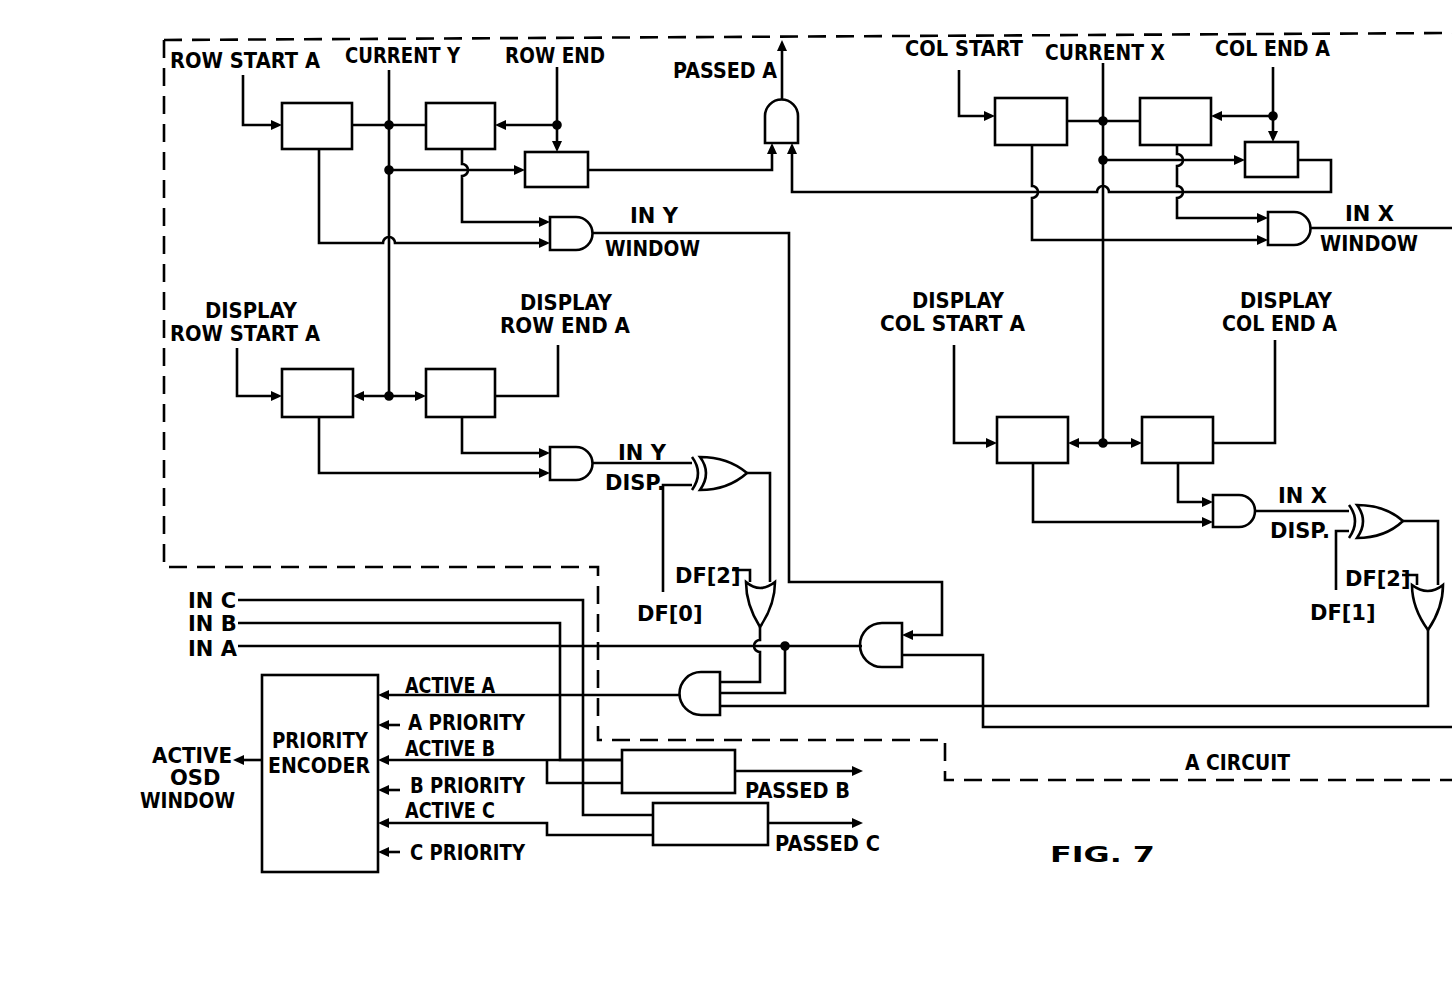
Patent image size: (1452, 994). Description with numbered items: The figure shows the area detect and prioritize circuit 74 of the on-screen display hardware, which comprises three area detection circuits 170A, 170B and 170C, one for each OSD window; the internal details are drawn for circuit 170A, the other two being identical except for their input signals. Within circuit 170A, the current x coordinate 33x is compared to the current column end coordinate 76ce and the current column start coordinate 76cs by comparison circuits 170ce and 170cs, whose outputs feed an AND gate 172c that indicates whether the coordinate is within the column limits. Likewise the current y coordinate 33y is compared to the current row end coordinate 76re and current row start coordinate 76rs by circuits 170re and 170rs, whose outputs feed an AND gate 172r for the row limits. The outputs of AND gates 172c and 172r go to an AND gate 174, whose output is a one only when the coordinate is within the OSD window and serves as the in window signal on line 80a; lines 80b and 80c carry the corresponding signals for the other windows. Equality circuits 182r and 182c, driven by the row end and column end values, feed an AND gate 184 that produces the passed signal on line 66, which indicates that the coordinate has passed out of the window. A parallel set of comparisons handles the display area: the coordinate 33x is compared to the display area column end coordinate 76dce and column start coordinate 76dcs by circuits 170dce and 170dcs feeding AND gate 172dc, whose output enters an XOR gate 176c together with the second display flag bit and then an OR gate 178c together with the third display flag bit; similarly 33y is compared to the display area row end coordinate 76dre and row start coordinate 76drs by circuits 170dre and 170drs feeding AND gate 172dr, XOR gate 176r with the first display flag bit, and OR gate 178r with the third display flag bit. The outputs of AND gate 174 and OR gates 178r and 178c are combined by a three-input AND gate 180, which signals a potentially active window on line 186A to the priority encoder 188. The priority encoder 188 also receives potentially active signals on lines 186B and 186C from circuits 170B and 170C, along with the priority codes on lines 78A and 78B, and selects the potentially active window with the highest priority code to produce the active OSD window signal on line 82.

The current row start coordinate 76rs is at (243, 100).
The row start comparison circuit 170rs is at (283, 152).
The current y coordinate 33y is at (389, 90).
The row end comparison circuit 170re is at (460, 103).
The current row end coordinate 76re is at (557, 84).
The row equality circuit 182r is at (578, 152).
The row AND gate 172r is at (583, 249).
The passed AND gate 184 is at (798, 112).
The interrupt signal line 66 is at (856, 418).
The current column start coordinate 76cs is at (959, 82).
The column start comparison circuit 170cs is at (1020, 83).
The column end comparison circuit 170ce is at (1155, 98).
The current column end coordinate 76ce is at (1273, 82).
The column equality circuit 182c is at (1290, 142).
The column AND gate 172c is at (1280, 250).
The current x coordinate 33x is at (1103, 270).
The current display area row start coordinate 76drs is at (237, 370).
The display area row start comparison circuit 170drs is at (302, 418).
The display area row end comparison circuit 170dre is at (443, 418).
The current display area row end coordinate 76dre is at (558, 362).
The display area row AND gate 172dr is at (575, 481).
The row XOR gate 176r is at (735, 457).
The row OR gate 178r is at (775, 600).
The current display area column start coordinate 76dcs is at (954, 356).
The display area column start comparison circuit 170dcs is at (1010, 417).
The display area column end comparison circuit 170dce is at (1150, 417).
The current display area column end coordinate 76dce is at (1275, 392).
The display area column AND gate 172dc is at (1225, 527).
The column XOR gate 176c is at (1375, 505).
The column OR gate 178c is at (1415, 618).
The in window signal line 80a is at (258, 600).
The in window signal line 80b is at (318, 623).
The in window signal line 80c is at (378, 646).
The potentially active signal line 186A is at (537, 695).
The three-input AND gate 180 is at (690, 680).
The in window AND gate 174 is at (880, 667).
The active OSD window signal line 82 is at (262, 755).
The priority code line 78A is at (396, 722).
The potentially active signal line 186B is at (533, 758).
The area detection circuit 170B is at (710, 750).
The priority encoder 188 is at (305, 805).
The priority code line 78B is at (396, 790).
The potentially active signal line 186C is at (547, 840).
The area detection circuit 170C is at (690, 845).
The area detection circuit 170A is at (1110, 780).
The area detect and prioritize circuit 74 is at (1342, 797).